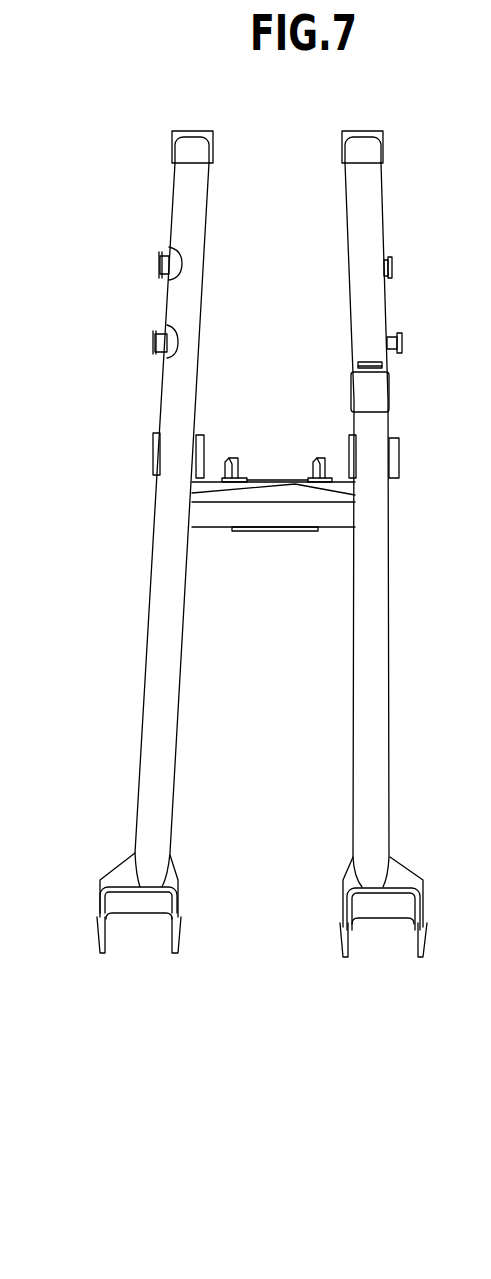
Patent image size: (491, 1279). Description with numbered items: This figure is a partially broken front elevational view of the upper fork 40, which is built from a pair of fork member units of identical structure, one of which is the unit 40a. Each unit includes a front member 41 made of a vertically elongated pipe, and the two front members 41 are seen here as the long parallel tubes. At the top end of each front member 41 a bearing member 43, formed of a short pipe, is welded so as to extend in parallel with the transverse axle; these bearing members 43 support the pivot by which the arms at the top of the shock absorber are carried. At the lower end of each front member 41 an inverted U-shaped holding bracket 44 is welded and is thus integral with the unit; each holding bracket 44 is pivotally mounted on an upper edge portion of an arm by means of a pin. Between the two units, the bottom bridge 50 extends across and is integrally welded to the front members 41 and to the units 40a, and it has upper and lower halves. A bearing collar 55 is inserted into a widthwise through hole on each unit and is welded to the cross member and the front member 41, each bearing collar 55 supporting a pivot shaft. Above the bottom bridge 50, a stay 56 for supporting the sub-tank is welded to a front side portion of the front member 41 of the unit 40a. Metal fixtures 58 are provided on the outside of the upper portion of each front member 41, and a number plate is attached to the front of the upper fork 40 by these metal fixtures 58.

The upper fork 40 is at (398, 300).
The fork member unit 40a is at (142, 387).
The front member 41 is at (163, 607).
The bearing member 43 is at (203, 135).
The holding bracket 44 is at (175, 887).
The bottom bridge 50 is at (278, 517).
The bearing collar 55 is at (150, 460).
The stay 56 is at (388, 388).
The metal fixture 58 is at (158, 263).